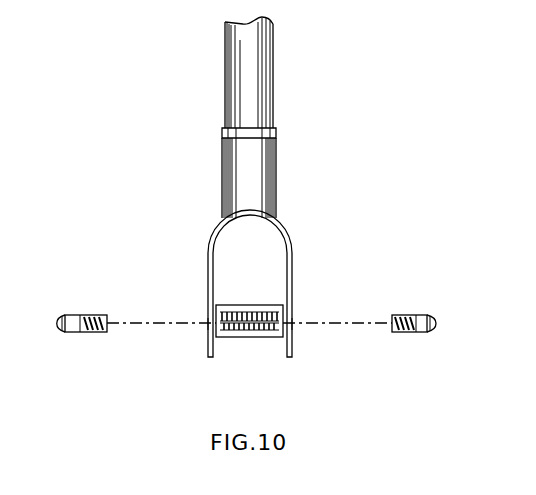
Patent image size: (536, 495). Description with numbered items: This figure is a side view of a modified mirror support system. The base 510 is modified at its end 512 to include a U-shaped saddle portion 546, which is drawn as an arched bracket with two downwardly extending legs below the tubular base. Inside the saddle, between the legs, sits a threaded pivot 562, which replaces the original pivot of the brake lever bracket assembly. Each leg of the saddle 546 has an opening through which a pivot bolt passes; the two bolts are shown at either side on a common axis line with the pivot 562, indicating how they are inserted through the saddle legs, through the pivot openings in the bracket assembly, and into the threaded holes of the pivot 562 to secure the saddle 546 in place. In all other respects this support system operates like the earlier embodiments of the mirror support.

The base 510 is at (278, 72).
The end 512 is at (278, 187).
The U-shaped saddle portion 546 is at (293, 257).
The pivot 562 is at (245, 337).